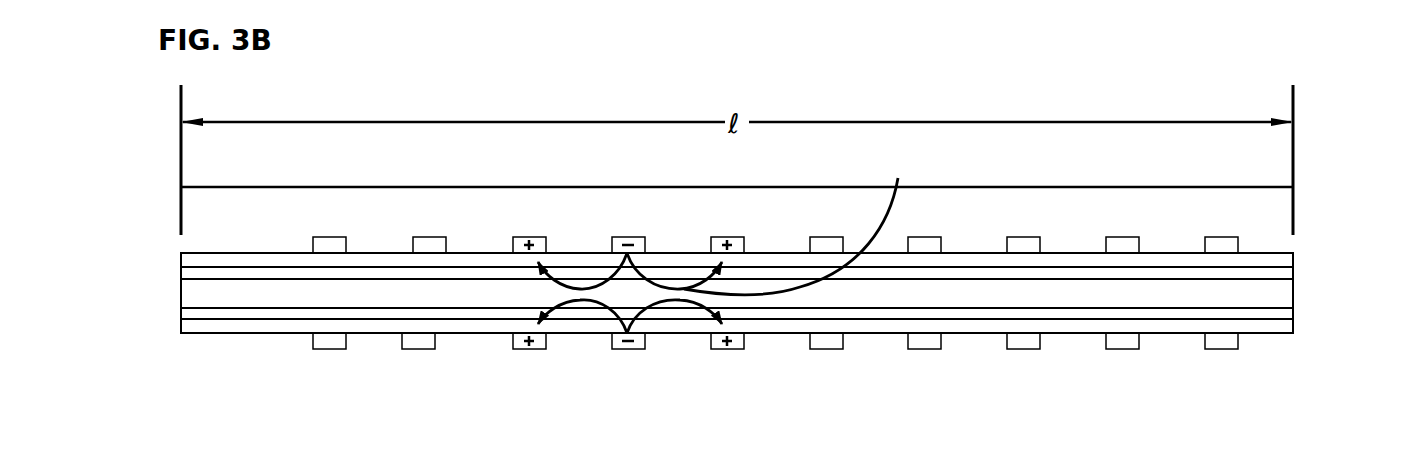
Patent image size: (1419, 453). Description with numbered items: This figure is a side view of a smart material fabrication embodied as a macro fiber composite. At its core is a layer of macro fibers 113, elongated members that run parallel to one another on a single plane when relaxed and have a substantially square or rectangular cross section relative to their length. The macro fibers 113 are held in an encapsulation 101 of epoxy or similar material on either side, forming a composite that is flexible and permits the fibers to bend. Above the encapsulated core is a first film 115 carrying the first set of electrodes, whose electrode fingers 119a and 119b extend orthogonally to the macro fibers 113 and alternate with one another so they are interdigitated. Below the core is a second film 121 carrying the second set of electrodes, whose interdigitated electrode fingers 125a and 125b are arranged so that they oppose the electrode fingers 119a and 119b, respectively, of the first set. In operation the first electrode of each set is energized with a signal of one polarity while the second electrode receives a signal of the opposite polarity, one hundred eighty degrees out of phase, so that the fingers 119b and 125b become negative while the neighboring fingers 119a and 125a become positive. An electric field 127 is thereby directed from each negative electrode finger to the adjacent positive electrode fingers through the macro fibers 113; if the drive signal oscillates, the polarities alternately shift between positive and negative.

The encapsulation 101 is at (1295, 273).
The macro fibers 113 is at (1295, 292).
The first film 115 is at (1295, 257).
The second film 121 is at (1295, 326).
The electrode fingers 119a is at (522, 237).
The electrode fingers 119b is at (627, 237).
The interdigitated electrode fingers 125a is at (518, 349).
The interdigitated electrode fingers 125b is at (618, 349).
The electric field 127 is at (730, 243).